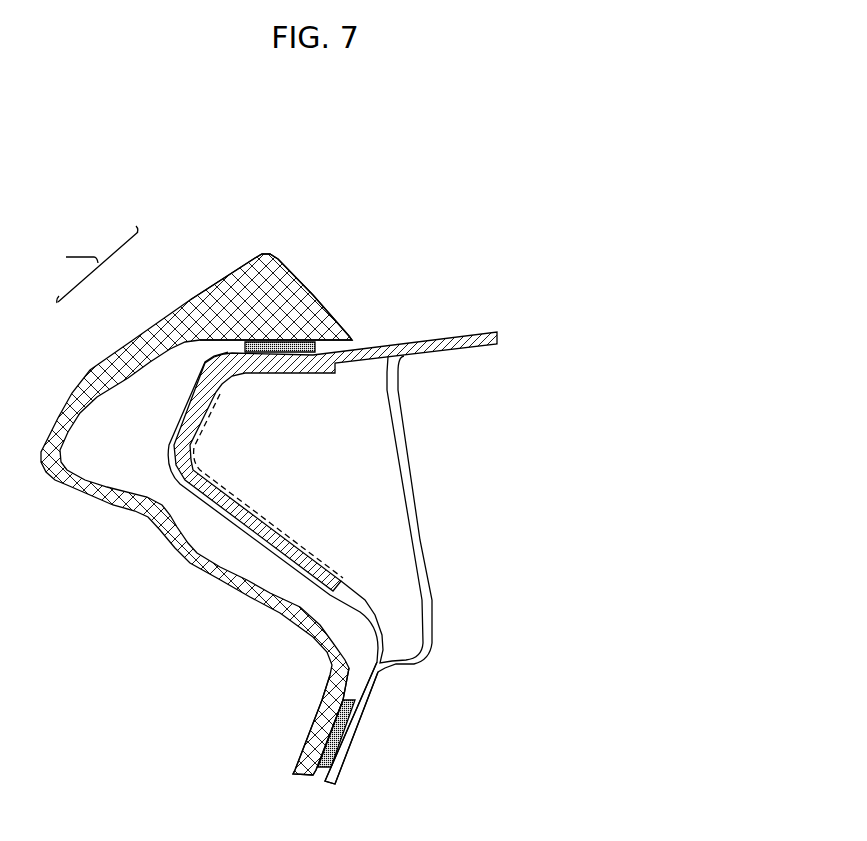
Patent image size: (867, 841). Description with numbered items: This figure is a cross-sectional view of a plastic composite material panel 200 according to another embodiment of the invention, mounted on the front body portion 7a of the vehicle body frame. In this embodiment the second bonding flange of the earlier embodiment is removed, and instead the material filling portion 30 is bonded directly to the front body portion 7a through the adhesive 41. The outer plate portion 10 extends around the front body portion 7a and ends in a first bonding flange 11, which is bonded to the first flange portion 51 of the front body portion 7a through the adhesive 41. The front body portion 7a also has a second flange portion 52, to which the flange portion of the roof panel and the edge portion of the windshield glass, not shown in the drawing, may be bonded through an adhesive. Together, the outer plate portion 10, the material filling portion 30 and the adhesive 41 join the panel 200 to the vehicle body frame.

The plastic composite material panel 200 is at (97, 264).
The outer plate portion 10 is at (87, 364).
The first bonding flange 11 is at (318, 722).
The material filling portion 30 is at (180, 294).
The adhesive 41 is at (299, 348).
The first flange portion 51 is at (362, 690).
The second flange portion 52 is at (453, 338).
The front body portion 7a is at (437, 568).